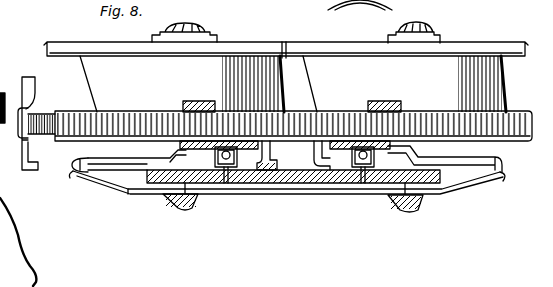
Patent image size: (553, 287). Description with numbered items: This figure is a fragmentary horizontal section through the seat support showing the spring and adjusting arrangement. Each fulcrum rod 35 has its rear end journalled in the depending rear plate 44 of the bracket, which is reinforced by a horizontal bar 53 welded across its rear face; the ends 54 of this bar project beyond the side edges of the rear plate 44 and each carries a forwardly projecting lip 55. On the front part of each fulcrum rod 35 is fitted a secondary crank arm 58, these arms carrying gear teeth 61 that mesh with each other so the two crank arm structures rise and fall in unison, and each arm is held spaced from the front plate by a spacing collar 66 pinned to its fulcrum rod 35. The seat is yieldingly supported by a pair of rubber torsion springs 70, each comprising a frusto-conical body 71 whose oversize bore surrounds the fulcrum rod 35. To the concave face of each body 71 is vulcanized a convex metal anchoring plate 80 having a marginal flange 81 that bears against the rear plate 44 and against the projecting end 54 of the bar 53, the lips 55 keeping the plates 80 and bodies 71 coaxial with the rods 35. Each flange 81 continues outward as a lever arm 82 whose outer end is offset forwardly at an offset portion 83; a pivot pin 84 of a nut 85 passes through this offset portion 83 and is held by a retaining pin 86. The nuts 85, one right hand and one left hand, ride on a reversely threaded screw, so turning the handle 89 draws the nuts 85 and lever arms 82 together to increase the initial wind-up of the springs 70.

The fulcrum rod 35 is at (170, 206).
The depending rear plate 44 is at (313, 176).
The horizontal bar 53 is at (285, 184).
The ends 54 is at (114, 190).
The forwardly projecting lip 55 is at (78, 163).
The secondary crank arm 58 is at (70, 42).
The gear teeth 61 is at (284, 43).
The spacing collar 66 is at (211, 37).
The rubber torsion spring 70 is at (84, 79).
The frusto-conical body 71 is at (95, 98).
The convex metal anchoring plate 80 is at (72, 173).
The marginal flange 81 is at (128, 194).
The lever arm 82 is at (135, 162).
The offset portion 83 is at (176, 156).
The pivot pin 84 is at (229, 166).
The nut 85 is at (220, 110).
The retaining pin 86 is at (221, 167).
The handle 89 is at (26, 77).